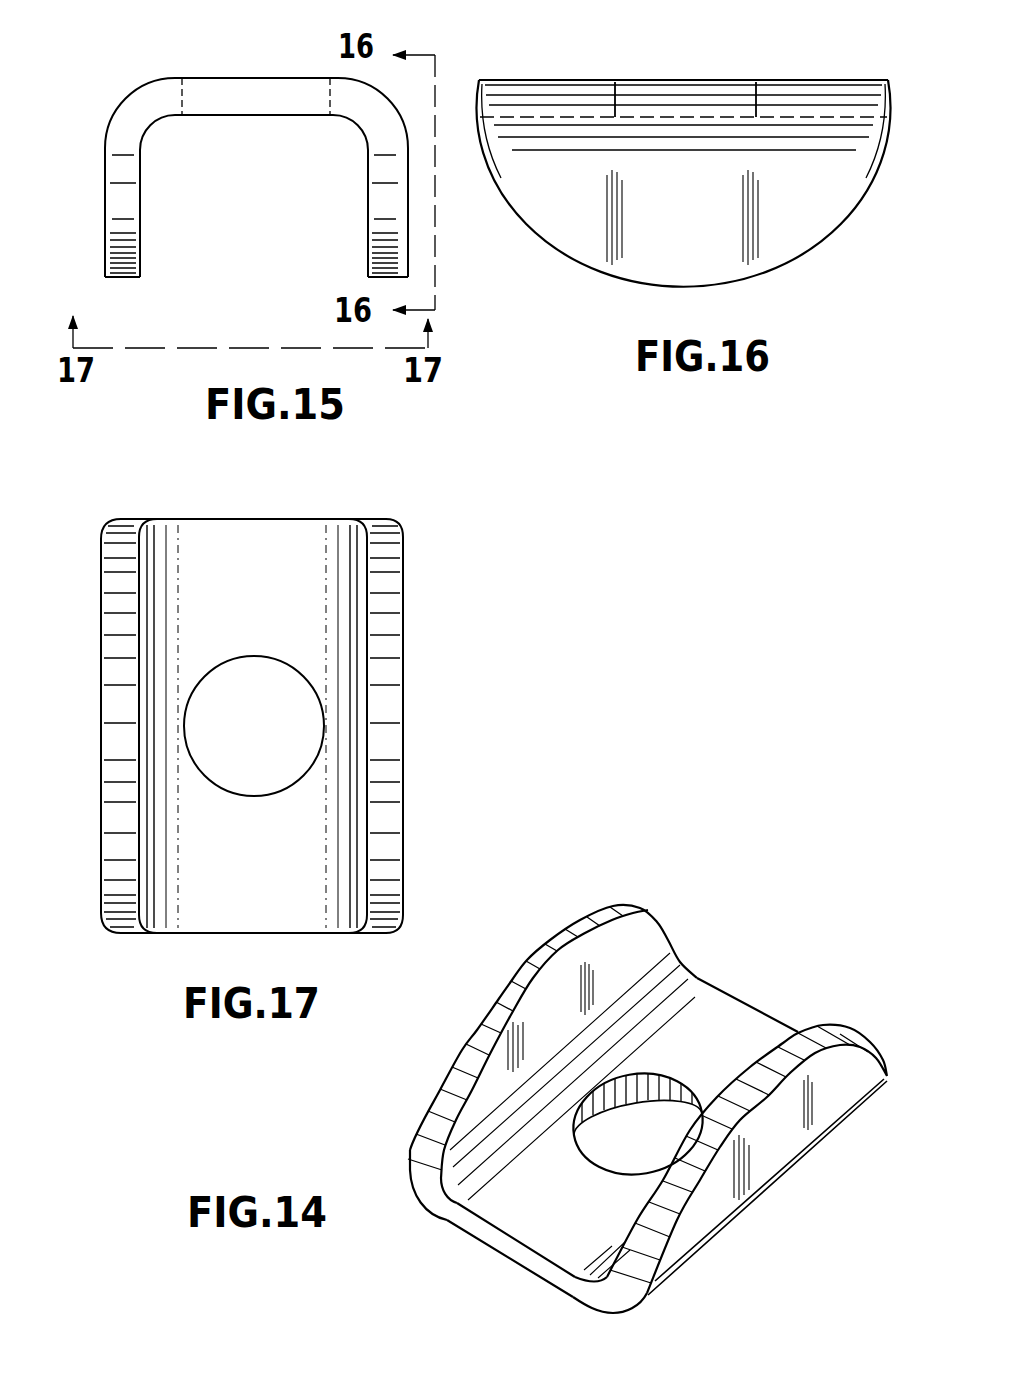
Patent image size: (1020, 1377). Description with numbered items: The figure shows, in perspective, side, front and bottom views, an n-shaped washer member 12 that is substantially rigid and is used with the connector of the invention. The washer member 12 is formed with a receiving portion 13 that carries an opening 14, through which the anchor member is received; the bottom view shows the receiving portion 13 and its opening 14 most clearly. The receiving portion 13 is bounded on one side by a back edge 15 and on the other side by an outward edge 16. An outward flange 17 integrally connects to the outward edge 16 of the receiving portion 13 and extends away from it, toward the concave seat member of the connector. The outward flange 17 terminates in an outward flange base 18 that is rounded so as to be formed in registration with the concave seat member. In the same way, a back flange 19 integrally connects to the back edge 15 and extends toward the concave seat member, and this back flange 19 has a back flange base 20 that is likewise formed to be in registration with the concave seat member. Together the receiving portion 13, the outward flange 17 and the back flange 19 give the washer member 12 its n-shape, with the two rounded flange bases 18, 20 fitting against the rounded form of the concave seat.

In FIG. 15, the washer member 12 is at (267, 158).
In FIG. 16, the washer member 12 is at (694, 161).
In FIG. 17, the washer member 12 is at (291, 702).
In FIG. 14, the washer member 12 is at (632, 1075).
In FIG. 15, the receiving portion 13 is at (208, 78).
In FIG. 16, the receiving portion 13 is at (538, 80).
In FIG. 17, the receiving portion 13 is at (272, 612).
In FIG. 14, the receiving portion 13 is at (720, 1004).
In FIG. 15, the opening 14 is at (196, 112).
In FIG. 16, the opening 14 is at (615, 98).
In FIG. 17, the opening 14 is at (220, 668).
In FIG. 14, the opening 14 is at (628, 1090).
In FIG. 15, the back edge 15 is at (160, 78).
In FIG. 17, the back edge 15 is at (172, 519).
In FIG. 14, the back edge 15 is at (453, 1205).
In FIG. 15, the outward edge 16 is at (360, 80).
In FIG. 17, the outward edge 16 is at (330, 519).
In FIG. 14, the outward edge 16 is at (587, 1280).
In FIG. 15, the outward flange 17 is at (408, 197).
In FIG. 16, the outward flange 17 is at (800, 180).
In FIG. 17, the outward flange 17 is at (404, 712).
In FIG. 14, the outward flange 17 is at (791, 1140).
In FIG. 15, the outward flange base 18 is at (396, 283).
In FIG. 16, the outward flange base 18 is at (777, 270).
In FIG. 17, the outward flange base 18 is at (382, 740).
In FIG. 14, the outward flange base 18 is at (766, 1068).
In FIG. 15, the back flange 19 is at (105, 170).
In FIG. 17, the back flange 19 is at (99, 701).
In FIG. 14, the back flange 19 is at (488, 1102).
In FIG. 15, the back flange base 20 is at (120, 279).
In FIG. 17, the back flange base 20 is at (126, 744).
In FIG. 14, the back flange base 20 is at (518, 982).